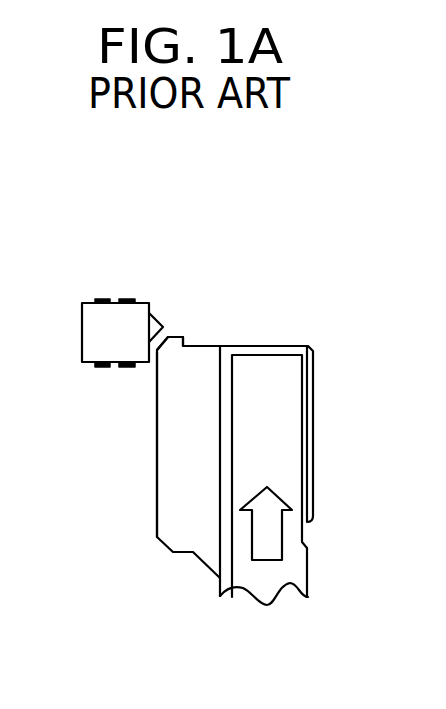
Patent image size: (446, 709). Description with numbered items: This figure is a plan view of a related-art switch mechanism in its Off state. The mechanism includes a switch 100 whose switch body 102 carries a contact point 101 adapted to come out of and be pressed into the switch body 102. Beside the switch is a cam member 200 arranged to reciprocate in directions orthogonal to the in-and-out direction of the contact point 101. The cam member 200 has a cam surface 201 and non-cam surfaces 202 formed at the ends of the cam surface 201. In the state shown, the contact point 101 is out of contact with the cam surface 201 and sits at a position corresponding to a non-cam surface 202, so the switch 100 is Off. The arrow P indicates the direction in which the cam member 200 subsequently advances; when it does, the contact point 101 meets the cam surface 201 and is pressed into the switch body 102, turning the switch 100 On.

The switch 100 is at (121, 272).
The contact point 101 is at (162, 330).
The switch body 102 is at (92, 332).
The cam member 200 is at (264, 338).
The cam surface 201 is at (157, 462).
The non-cam surfaces 202 is at (166, 333).
The arrow P is at (268, 552).